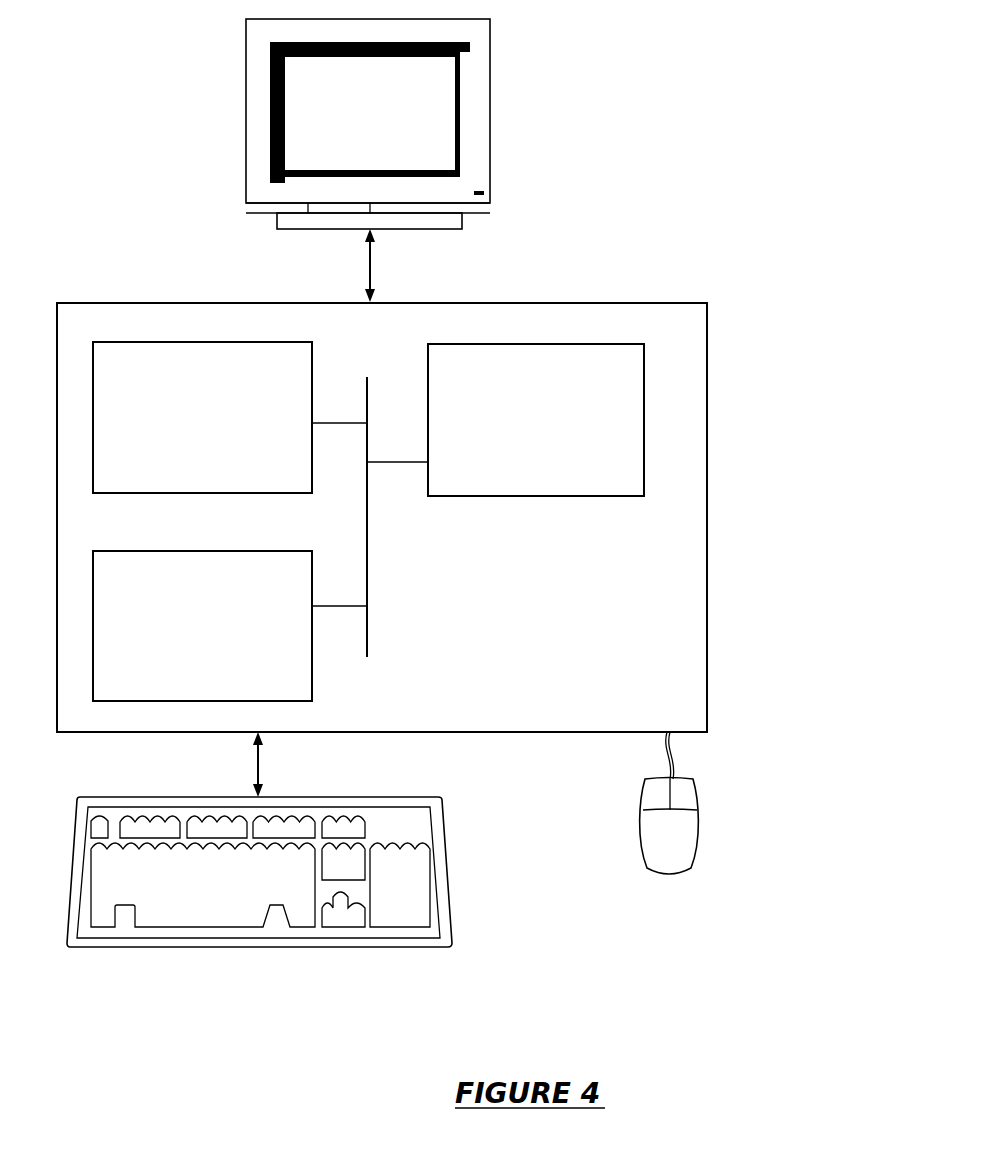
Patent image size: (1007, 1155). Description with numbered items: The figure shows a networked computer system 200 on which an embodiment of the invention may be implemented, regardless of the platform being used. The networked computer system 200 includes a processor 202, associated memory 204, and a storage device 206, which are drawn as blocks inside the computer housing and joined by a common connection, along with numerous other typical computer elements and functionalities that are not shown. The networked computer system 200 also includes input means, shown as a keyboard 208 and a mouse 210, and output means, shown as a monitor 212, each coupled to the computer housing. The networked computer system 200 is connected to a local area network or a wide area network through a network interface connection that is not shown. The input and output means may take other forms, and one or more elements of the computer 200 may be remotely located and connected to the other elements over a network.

The networked computer system 200 is at (727, 168).
The processor 202 is at (560, 432).
The memory 204 is at (226, 429).
The storage device 206 is at (221, 637).
The keyboard 208 is at (226, 894).
The mouse 210 is at (731, 803).
The monitor 212 is at (394, 129).